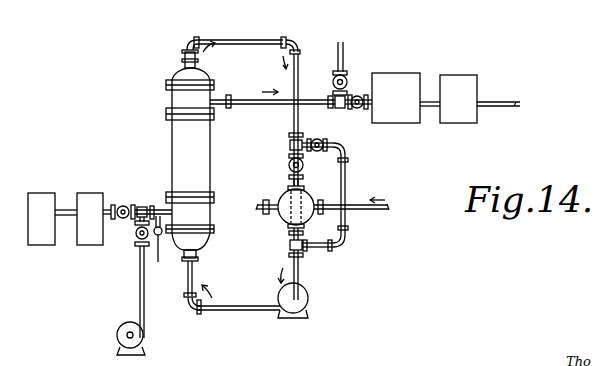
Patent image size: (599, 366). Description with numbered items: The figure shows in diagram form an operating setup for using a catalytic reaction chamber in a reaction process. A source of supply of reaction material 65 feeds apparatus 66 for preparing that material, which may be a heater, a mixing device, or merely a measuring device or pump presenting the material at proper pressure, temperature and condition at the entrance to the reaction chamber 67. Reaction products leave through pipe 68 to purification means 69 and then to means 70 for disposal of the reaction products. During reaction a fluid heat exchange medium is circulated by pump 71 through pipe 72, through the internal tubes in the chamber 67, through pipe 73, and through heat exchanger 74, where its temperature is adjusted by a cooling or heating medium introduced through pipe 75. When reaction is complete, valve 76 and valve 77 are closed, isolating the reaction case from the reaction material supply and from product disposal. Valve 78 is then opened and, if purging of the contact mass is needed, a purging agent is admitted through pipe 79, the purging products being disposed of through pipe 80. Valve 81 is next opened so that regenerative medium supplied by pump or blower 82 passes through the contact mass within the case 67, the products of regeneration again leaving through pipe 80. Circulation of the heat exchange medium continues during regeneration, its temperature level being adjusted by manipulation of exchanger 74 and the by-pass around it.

The source of supply of reaction material 65 is at (43, 233).
The apparatus for the preparation of reaction material 66 is at (92, 235).
The reaction chamber 67 is at (210, 160).
The pipe 68 is at (310, 100).
The purification means 69 is at (406, 113).
The means for disposal of reaction products 70 is at (464, 113).
The pump 71 is at (295, 318).
The pipe 72 is at (193, 290).
The pipe 73 is at (266, 31).
The heat exchanger 74 is at (288, 213).
The pipe 75 is at (376, 208).
The valve 76 is at (125, 206).
The valve 77 is at (362, 115).
The valve 78 is at (334, 70).
The pipe 79 is at (158, 262).
The pipe 80 is at (344, 50).
The valve 81 is at (135, 233).
The pump or blower 82 is at (144, 338).